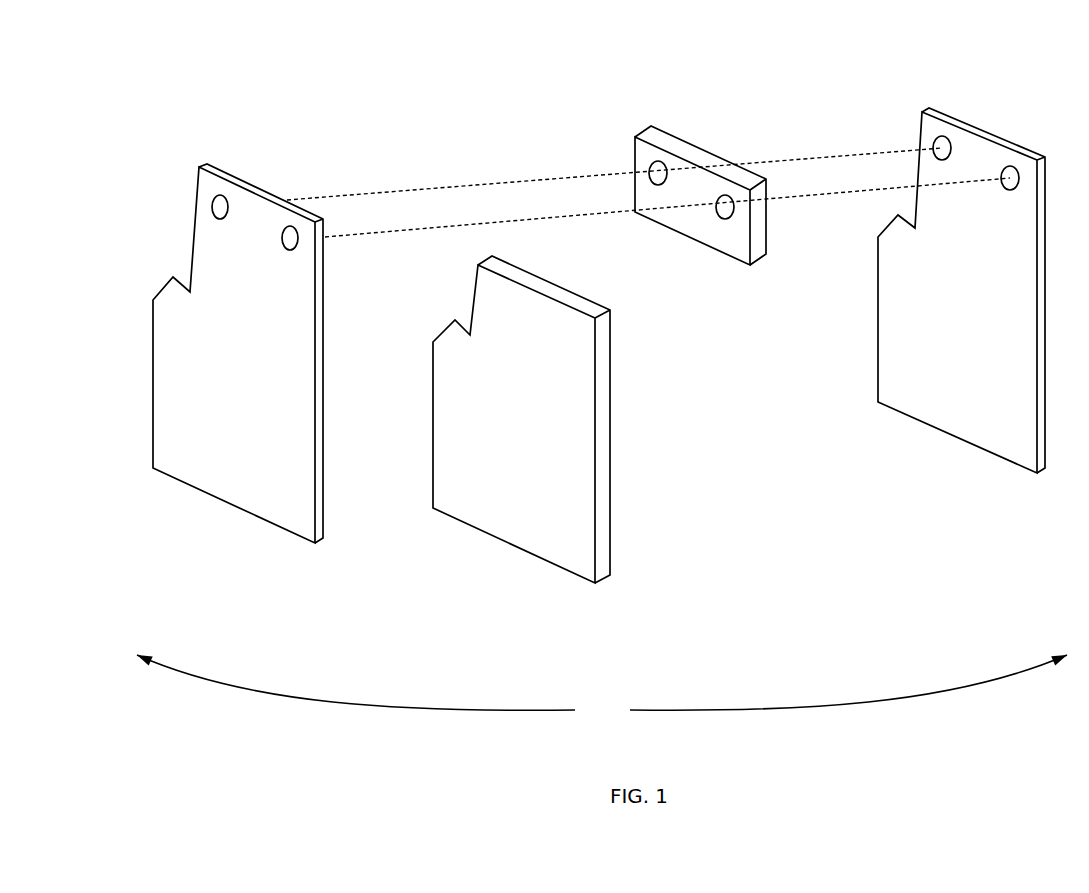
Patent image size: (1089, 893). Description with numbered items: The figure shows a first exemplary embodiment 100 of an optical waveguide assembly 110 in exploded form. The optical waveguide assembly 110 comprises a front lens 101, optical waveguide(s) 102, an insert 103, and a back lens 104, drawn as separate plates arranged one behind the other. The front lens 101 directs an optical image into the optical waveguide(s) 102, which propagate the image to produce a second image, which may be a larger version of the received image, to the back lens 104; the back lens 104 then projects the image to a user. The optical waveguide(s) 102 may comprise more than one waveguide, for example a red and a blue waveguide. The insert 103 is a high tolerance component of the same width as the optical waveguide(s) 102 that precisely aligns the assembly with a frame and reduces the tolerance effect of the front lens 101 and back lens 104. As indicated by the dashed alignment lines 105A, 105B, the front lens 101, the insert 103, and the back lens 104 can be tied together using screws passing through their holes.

The first exemplary embodiment 100 is at (547, 70).
The front lens 101 is at (238, 175).
The optical waveguide(s) 102 is at (557, 285).
The insert 103 is at (705, 150).
The back lens 104 is at (998, 135).
The alignment line 105A is at (442, 190).
The alignment line 105B is at (442, 228).
The optical waveguide assembly 110 is at (602, 688).